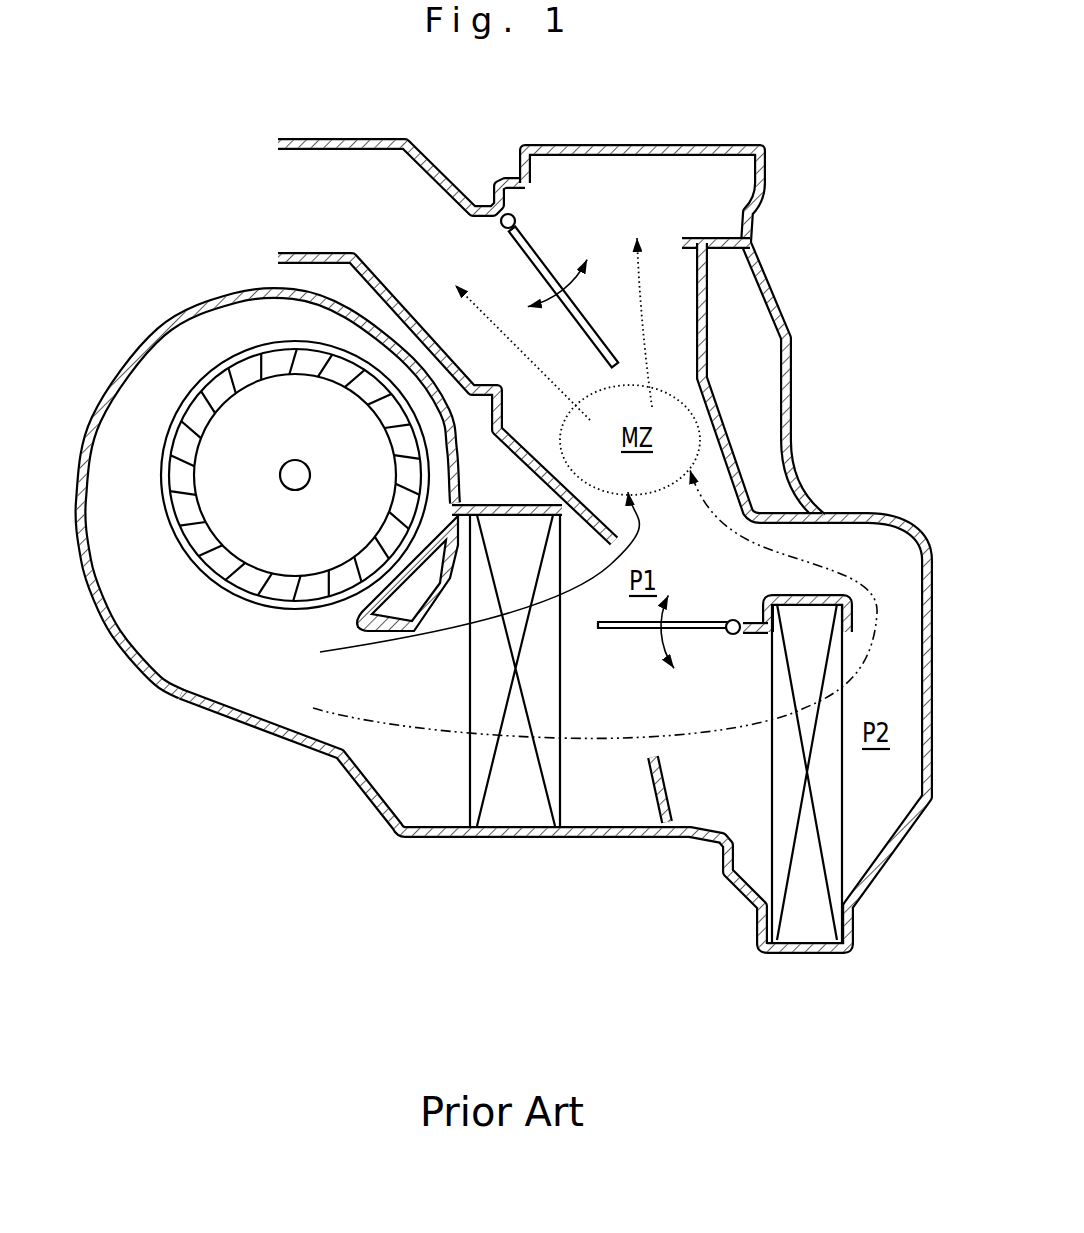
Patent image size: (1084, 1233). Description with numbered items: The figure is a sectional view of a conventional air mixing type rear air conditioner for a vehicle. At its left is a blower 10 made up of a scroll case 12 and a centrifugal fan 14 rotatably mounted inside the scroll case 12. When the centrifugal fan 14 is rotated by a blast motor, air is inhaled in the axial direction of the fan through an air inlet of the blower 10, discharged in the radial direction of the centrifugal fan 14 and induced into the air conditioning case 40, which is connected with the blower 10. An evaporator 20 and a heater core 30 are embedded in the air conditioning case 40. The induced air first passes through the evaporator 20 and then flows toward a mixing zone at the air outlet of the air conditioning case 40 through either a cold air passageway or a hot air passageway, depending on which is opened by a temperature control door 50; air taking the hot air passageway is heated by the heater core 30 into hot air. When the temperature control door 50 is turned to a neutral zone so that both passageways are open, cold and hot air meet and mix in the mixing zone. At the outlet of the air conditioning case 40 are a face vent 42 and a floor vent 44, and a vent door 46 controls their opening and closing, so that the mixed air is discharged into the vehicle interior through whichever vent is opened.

The blower 10 is at (267, 465).
The scroll case 12 is at (231, 292).
The centrifugal fan 14 is at (171, 422).
The evaporator 20 is at (518, 805).
The heater core 30 is at (803, 920).
The air conditioning case 40 is at (873, 511).
The face vent 42 is at (296, 181).
The floor vent 44 is at (616, 162).
The vent door 46 is at (545, 258).
The temperature control door 50 is at (626, 630).